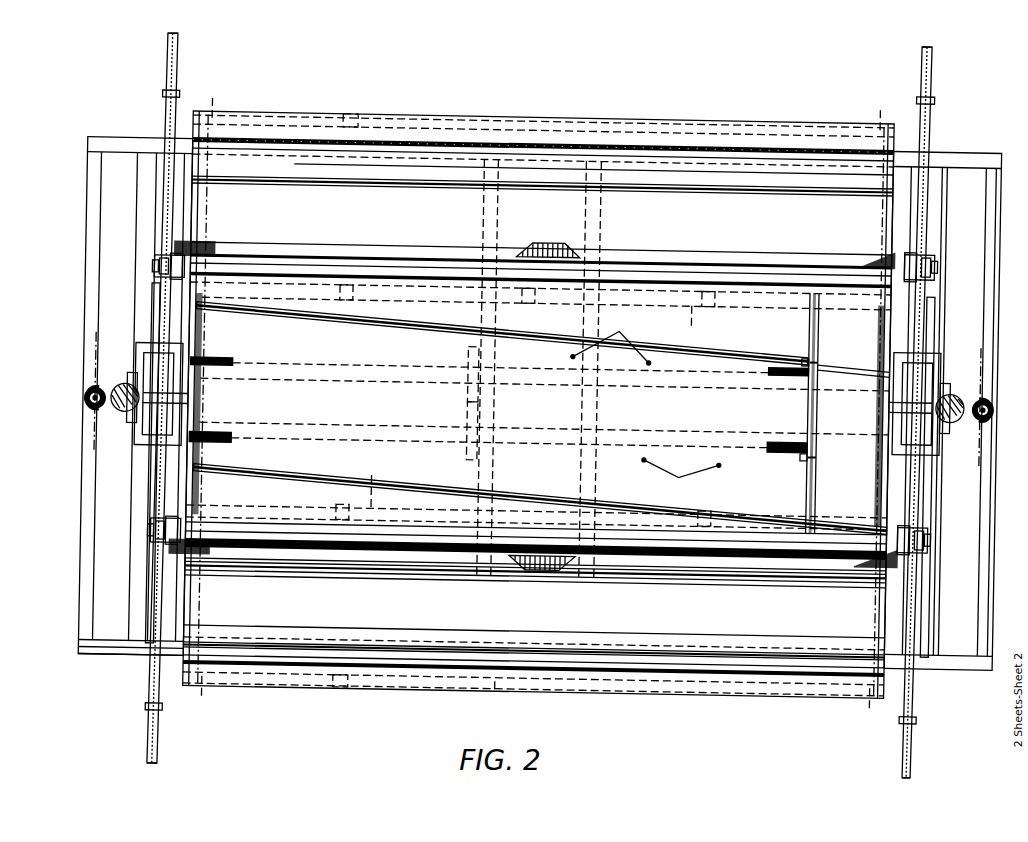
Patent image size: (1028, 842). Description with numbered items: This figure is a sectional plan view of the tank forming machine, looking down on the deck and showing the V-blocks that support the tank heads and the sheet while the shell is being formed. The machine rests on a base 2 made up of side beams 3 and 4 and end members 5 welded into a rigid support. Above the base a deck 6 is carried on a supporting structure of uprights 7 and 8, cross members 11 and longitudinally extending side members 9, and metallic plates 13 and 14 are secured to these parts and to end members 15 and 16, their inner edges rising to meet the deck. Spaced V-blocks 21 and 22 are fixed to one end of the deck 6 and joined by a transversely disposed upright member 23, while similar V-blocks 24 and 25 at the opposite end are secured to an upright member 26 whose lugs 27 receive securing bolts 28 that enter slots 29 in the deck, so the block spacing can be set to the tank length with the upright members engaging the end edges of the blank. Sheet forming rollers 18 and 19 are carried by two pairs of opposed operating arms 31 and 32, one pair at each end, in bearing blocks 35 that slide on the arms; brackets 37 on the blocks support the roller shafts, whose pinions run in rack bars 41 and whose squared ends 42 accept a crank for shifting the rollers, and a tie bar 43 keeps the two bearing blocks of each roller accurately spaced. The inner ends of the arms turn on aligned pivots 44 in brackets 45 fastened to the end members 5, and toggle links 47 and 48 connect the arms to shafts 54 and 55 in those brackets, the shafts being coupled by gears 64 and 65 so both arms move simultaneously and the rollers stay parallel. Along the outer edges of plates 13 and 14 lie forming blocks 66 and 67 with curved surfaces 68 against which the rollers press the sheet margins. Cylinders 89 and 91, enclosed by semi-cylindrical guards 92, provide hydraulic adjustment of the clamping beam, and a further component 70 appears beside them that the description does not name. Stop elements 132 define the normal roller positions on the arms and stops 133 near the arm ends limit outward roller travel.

The base 2 is at (117, 673).
The side beam 3 is at (100, 158).
The side beam 4 is at (86, 658).
The end member 5 is at (83, 283).
The deck 6 is at (326, 412).
The upright 7 is at (352, 511).
The upright 8 is at (580, 688).
The longitudinally extending side member 9 is at (688, 300).
The cross member 11 is at (200, 325).
The metallic plate 13 is at (430, 222).
The metallic plate 14 is at (437, 610).
The end member 15 is at (205, 220).
The end member 16 is at (876, 222).
The sheet forming roller 18 is at (668, 289).
The sheet forming roller 19 is at (616, 532).
The V-block 21 is at (230, 364).
The V-block 22 is at (230, 448).
The transversely disposed upright member 23 is at (200, 494).
The V-block 24 is at (778, 372).
The V-block 25 is at (772, 448).
The transversely disposed upright member 26 is at (808, 501).
The lug 27 is at (802, 355).
The securing bolt 28 is at (810, 357).
The slot 29 is at (645, 403).
The operating arm 31 is at (160, 66).
The operating arm 32 is at (158, 747).
The bearing block 35 is at (165, 265).
The bracket 37 is at (157, 278).
The rack bar 41 is at (160, 84).
The squared end 42 is at (150, 272).
The tie bar 43 is at (632, 262).
The pivot 44 is at (182, 407).
The bracket 45 is at (182, 418).
The link 47 is at (200, 322).
The link 48 is at (154, 480).
The shaft 54 is at (378, 385).
The shaft 55 is at (416, 428).
The gear 64 is at (467, 349).
The gear 65 is at (467, 458).
The forming block 66 is at (457, 146).
The forming block 67 is at (633, 672).
The curved surface 68 is at (508, 143).
The hand wheel 70 is at (122, 392).
The cylinder 89 is at (86, 402).
The cylinder 91 is at (992, 398).
The semi-cylindrical guard 92 is at (86, 412).
The stop element 132 is at (170, 286).
The stop 133 is at (157, 100).